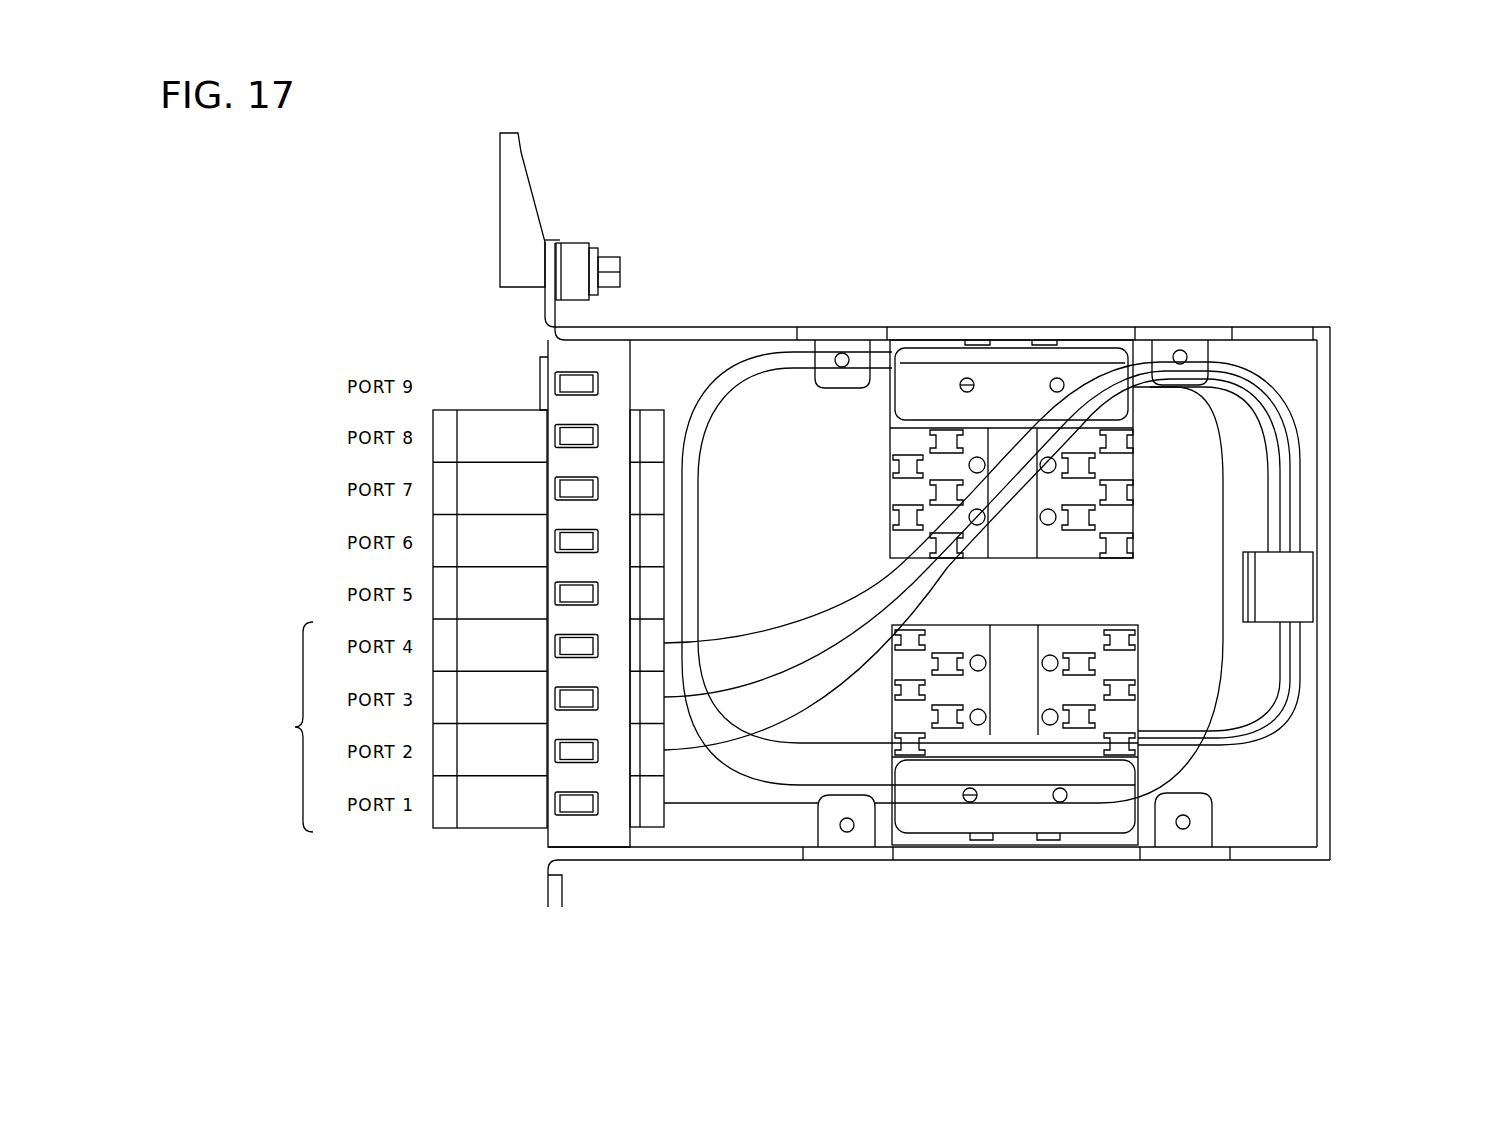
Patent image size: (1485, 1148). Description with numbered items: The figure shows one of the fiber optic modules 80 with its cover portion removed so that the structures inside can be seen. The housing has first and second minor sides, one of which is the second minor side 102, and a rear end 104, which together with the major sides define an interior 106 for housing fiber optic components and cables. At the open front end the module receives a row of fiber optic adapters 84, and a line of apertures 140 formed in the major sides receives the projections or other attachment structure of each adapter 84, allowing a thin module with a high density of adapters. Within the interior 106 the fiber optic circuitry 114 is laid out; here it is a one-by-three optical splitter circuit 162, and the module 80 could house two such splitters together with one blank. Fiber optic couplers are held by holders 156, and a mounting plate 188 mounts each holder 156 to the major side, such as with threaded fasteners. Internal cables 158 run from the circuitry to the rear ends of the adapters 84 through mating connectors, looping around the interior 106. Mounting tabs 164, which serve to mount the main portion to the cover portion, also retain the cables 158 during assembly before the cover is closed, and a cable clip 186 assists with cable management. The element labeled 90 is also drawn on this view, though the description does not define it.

The fiber optic module 80 is at (1021, 236).
The fiber optic adapter 84 is at (492, 830).
The latch lever 90 is at (533, 184).
The second minor side 102 is at (748, 326).
The rear end 104 is at (1331, 682).
The interior 106 is at (837, 492).
The fiber optic circuitry 114 is at (1295, 736).
The aperture 140 is at (600, 815).
The holder 156 is at (1013, 626).
The internal cable 158 is at (1270, 513).
The 1×3 optical splitter circuit 162 is at (281, 727).
The mounting tab 164 is at (1207, 345).
The cable clip 186 is at (1307, 587).
The mounting plate 188 is at (1117, 820).